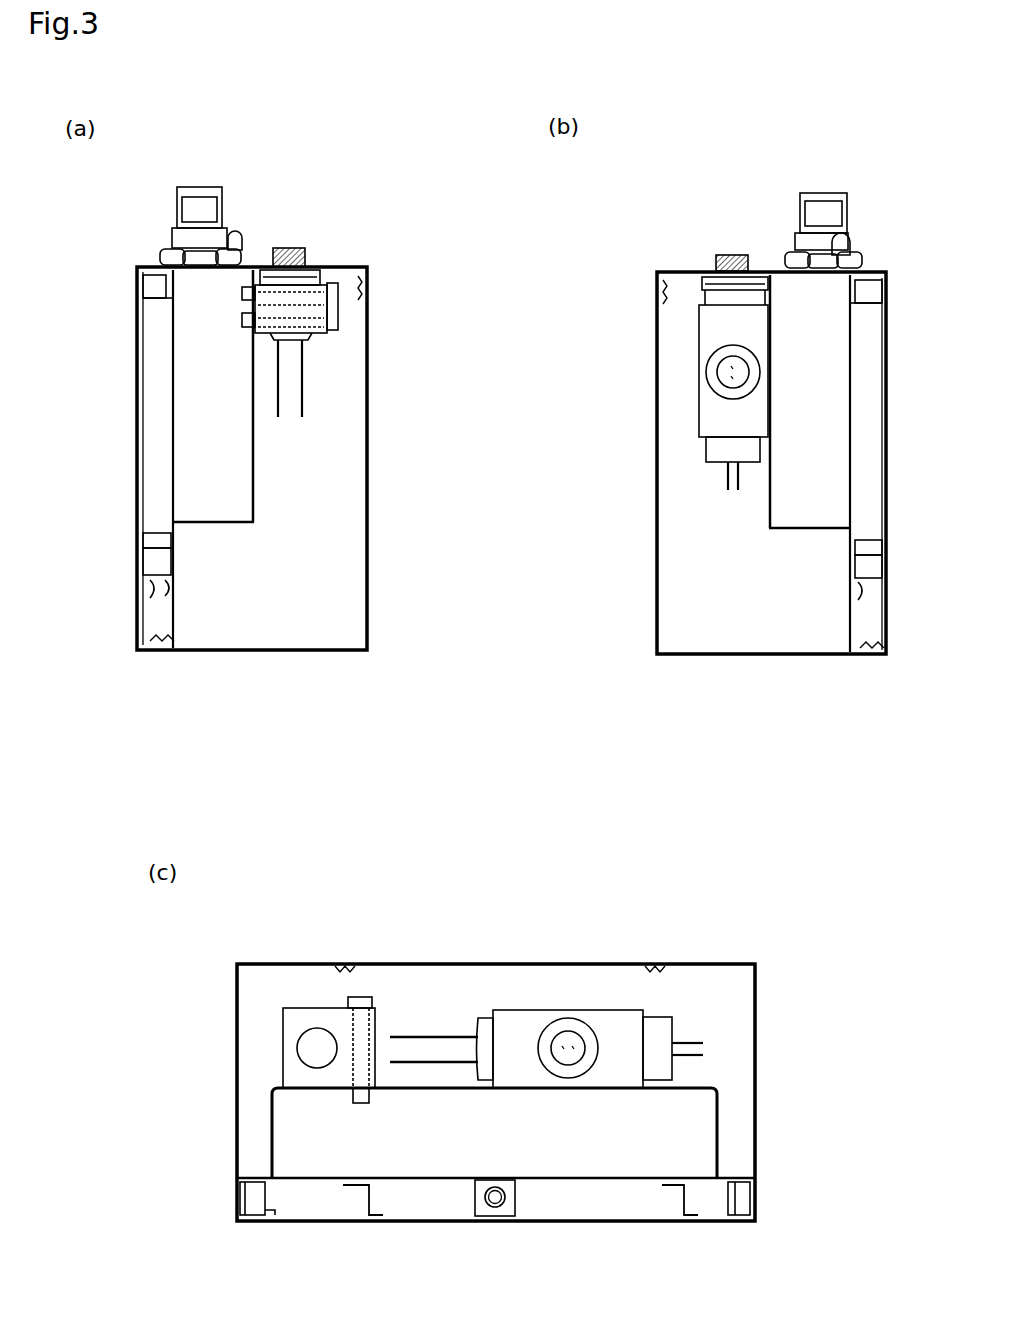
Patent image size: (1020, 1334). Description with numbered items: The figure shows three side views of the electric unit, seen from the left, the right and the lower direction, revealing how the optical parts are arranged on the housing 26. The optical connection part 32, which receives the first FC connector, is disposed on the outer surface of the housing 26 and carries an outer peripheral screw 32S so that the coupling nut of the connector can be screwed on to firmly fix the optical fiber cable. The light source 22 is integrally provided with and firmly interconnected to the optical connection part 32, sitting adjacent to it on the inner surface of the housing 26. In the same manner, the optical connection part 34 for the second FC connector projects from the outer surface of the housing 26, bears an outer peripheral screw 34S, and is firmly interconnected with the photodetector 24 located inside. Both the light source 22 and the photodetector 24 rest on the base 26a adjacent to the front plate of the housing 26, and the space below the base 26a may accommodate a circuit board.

The light source 22 is at (724, 372).
The photodetector 24 is at (303, 306).
The housing 26 is at (369, 465).
The base 26a is at (257, 500).
The optical connection part 32 is at (737, 256).
The outer peripheral screw 32S is at (718, 262).
The optical connection part 34 is at (303, 254).
The outer peripheral screw 34S is at (306, 258).